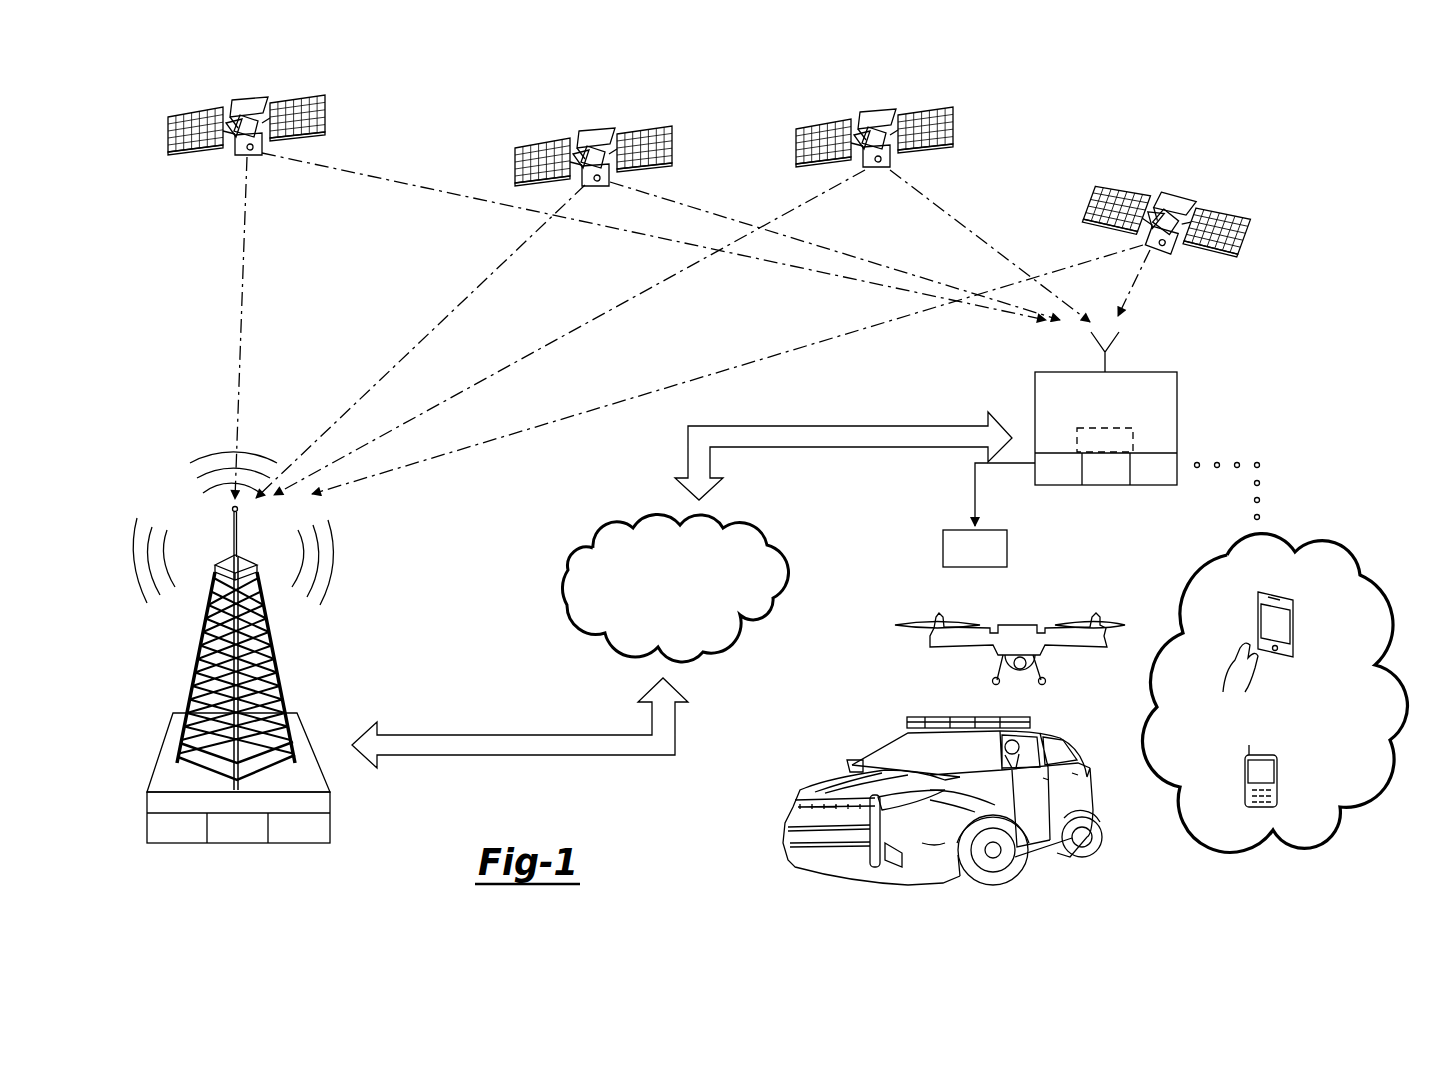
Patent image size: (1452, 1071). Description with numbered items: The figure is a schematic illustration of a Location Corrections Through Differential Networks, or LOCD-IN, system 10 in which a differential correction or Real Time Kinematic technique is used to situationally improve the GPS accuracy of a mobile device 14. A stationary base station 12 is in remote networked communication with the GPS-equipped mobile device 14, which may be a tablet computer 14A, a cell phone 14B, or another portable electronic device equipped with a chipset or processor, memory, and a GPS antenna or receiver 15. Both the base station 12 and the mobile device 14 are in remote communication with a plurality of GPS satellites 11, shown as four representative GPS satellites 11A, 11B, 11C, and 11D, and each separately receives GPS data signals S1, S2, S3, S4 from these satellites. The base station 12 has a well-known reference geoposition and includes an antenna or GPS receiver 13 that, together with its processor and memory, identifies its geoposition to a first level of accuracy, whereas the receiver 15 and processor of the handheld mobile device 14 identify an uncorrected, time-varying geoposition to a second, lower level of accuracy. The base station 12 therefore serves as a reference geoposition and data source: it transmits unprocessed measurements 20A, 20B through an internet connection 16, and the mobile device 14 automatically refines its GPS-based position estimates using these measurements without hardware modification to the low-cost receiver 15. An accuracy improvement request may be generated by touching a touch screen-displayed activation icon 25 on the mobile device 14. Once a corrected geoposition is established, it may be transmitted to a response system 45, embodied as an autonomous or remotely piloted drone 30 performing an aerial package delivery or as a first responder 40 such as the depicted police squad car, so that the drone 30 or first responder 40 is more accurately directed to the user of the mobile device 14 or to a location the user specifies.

The LOCD-IN system 10 is at (1140, 117).
The GPS satellites 11 is at (121, 83).
The GPS satellite 11A is at (253, 103).
The GPS satellite 11B is at (598, 133).
The GPS satellite 11C is at (878, 112).
The GPS satellite 11D is at (1168, 196).
The GPS data signal S1 is at (247, 228).
The GPS data signal S2 is at (695, 207).
The GPS data signal S3 is at (947, 205).
The GPS data signal S4 is at (1093, 253).
The base station 12 is at (147, 808).
The GPS receiver 13 is at (166, 682).
The mobile device 14 is at (1178, 412).
The tablet computer 14A is at (1294, 584).
The cell phone 14B is at (1278, 788).
The GPS antenna or receiver 15 is at (1149, 340).
The internet connection 16 is at (788, 560).
The unprocessed measurements 20A is at (908, 426).
The unprocessed measurements 20B is at (512, 735).
The activation icon 25 is at (1105, 442).
The drone 30 is at (1000, 618).
The first responder 40 is at (852, 730).
The response system 45 is at (989, 515).